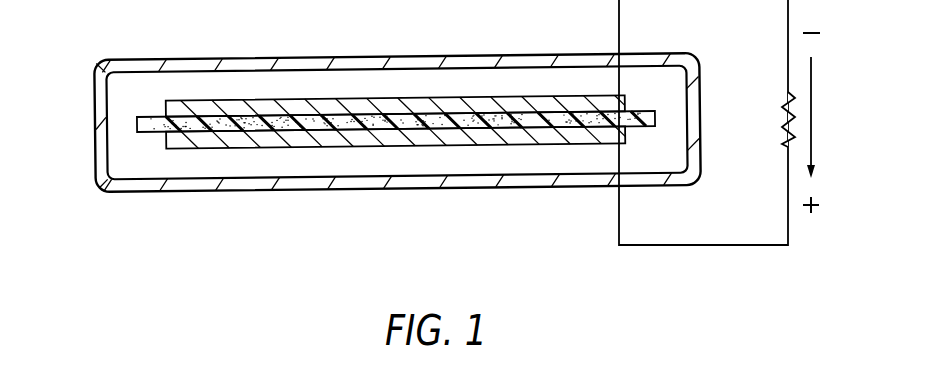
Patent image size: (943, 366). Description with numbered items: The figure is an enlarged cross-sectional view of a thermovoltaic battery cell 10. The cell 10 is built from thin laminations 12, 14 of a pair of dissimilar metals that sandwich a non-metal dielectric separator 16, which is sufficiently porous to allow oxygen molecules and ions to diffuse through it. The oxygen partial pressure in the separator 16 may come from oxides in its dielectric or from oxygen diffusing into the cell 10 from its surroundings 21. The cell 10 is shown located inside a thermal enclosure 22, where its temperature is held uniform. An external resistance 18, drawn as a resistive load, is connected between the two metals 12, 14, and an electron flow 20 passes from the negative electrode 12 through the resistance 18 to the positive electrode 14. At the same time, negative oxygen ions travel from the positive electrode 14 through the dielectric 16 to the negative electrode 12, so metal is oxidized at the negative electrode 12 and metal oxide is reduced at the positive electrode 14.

The battery cell 10 is at (356, 166).
The negative electrode lamination 12 is at (166, 106).
The positive electrode lamination 14 is at (166, 140).
The dielectric separator 16 is at (137, 126).
The external resistive load 18 is at (786, 117).
The electron flow 20 is at (812, 121).
The surroundings 21 is at (243, 84).
The thermal enclosure 22 is at (364, 55).